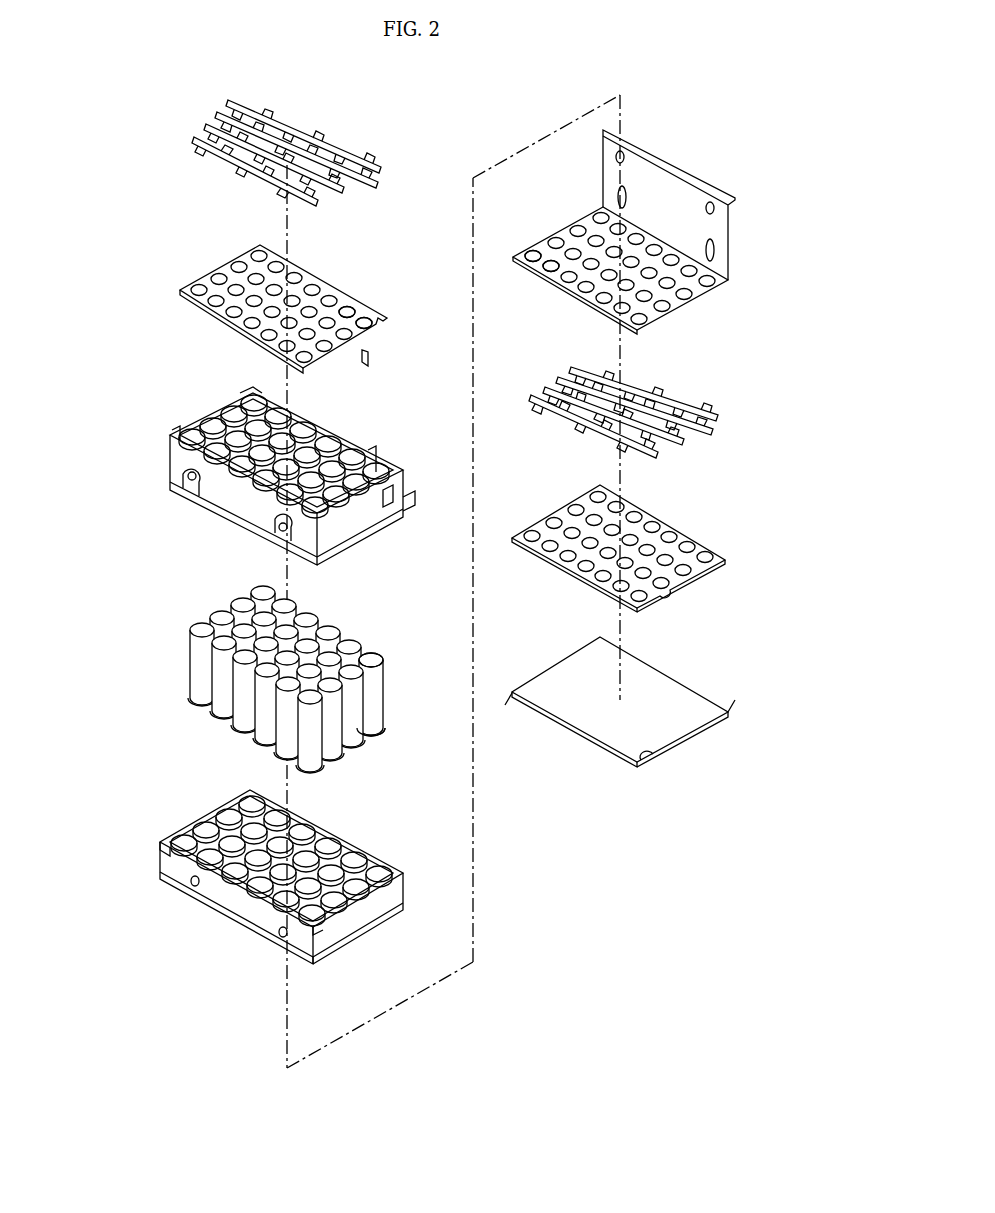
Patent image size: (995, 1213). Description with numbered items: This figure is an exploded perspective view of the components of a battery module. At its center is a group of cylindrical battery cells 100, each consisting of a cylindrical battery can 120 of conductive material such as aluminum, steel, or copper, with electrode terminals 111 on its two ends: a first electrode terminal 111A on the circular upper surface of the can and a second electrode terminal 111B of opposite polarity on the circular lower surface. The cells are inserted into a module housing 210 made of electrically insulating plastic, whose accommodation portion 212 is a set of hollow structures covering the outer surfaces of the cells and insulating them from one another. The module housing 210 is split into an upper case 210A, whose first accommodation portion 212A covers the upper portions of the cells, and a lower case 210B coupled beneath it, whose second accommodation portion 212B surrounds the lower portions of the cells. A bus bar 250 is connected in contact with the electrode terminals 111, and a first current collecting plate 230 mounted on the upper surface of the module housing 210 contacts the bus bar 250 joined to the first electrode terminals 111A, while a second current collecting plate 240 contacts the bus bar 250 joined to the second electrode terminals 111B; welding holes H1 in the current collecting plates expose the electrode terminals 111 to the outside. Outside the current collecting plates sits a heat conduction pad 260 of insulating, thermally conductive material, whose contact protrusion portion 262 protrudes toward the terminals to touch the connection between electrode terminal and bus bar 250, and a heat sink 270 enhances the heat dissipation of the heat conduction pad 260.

The cylindrical battery cell 100 is at (323, 690).
The electrode terminal 111 is at (612, 900).
The first electrode terminal 111A is at (369, 668).
The second electrode terminal 111B is at (373, 754).
The battery can 120 is at (374, 708).
The module housing 210 is at (227, 675).
The upper case 210A is at (253, 476).
The lower case 210B is at (250, 877).
The accommodation portion 212 is at (612, 835).
The first accommodation portion 212A is at (356, 458).
The second accommodation portion 212B is at (354, 855).
The first current collecting plate 230 is at (387, 314).
The second current collecting plate 240 is at (728, 283).
The bus bar 250 is at (228, 98).
The heat conduction pad 260 is at (615, 548).
The contact protrusion portion 262 is at (576, 558).
The heat sink 270 is at (676, 690).
The welding hole H1 is at (370, 315).